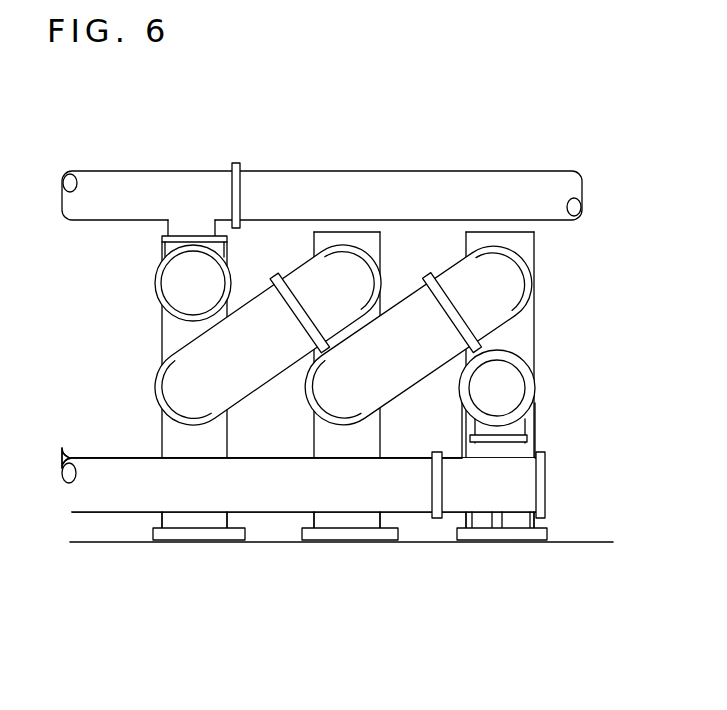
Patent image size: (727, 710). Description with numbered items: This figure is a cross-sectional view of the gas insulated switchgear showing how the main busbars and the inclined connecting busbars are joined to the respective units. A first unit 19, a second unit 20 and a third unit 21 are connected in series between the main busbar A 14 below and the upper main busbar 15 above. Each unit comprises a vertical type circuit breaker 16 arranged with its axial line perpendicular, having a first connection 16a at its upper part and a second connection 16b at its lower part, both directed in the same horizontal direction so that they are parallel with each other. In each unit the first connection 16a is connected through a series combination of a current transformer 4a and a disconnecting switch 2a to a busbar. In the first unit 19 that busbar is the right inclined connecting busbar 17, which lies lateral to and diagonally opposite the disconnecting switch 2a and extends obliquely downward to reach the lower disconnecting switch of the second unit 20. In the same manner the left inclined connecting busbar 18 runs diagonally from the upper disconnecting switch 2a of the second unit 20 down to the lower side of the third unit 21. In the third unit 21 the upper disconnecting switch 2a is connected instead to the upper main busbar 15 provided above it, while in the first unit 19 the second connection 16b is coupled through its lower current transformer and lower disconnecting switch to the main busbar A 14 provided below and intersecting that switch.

The main busbar A 14 is at (413, 488).
The upper main busbar 15 is at (181, 185).
The vertical type circuit breaker 16 is at (338, 445).
The first connection 16a is at (364, 250).
The second connection 16b is at (537, 388).
The right inclined connecting busbar 17 is at (398, 302).
The left inclined connecting busbar 18 is at (253, 300).
The first unit 19 is at (496, 130).
The second unit 20 is at (344, 113).
The third unit 21 is at (192, 116).
The disconnecting switch 2a is at (152, 289).
The current transformer 4a is at (334, 271).